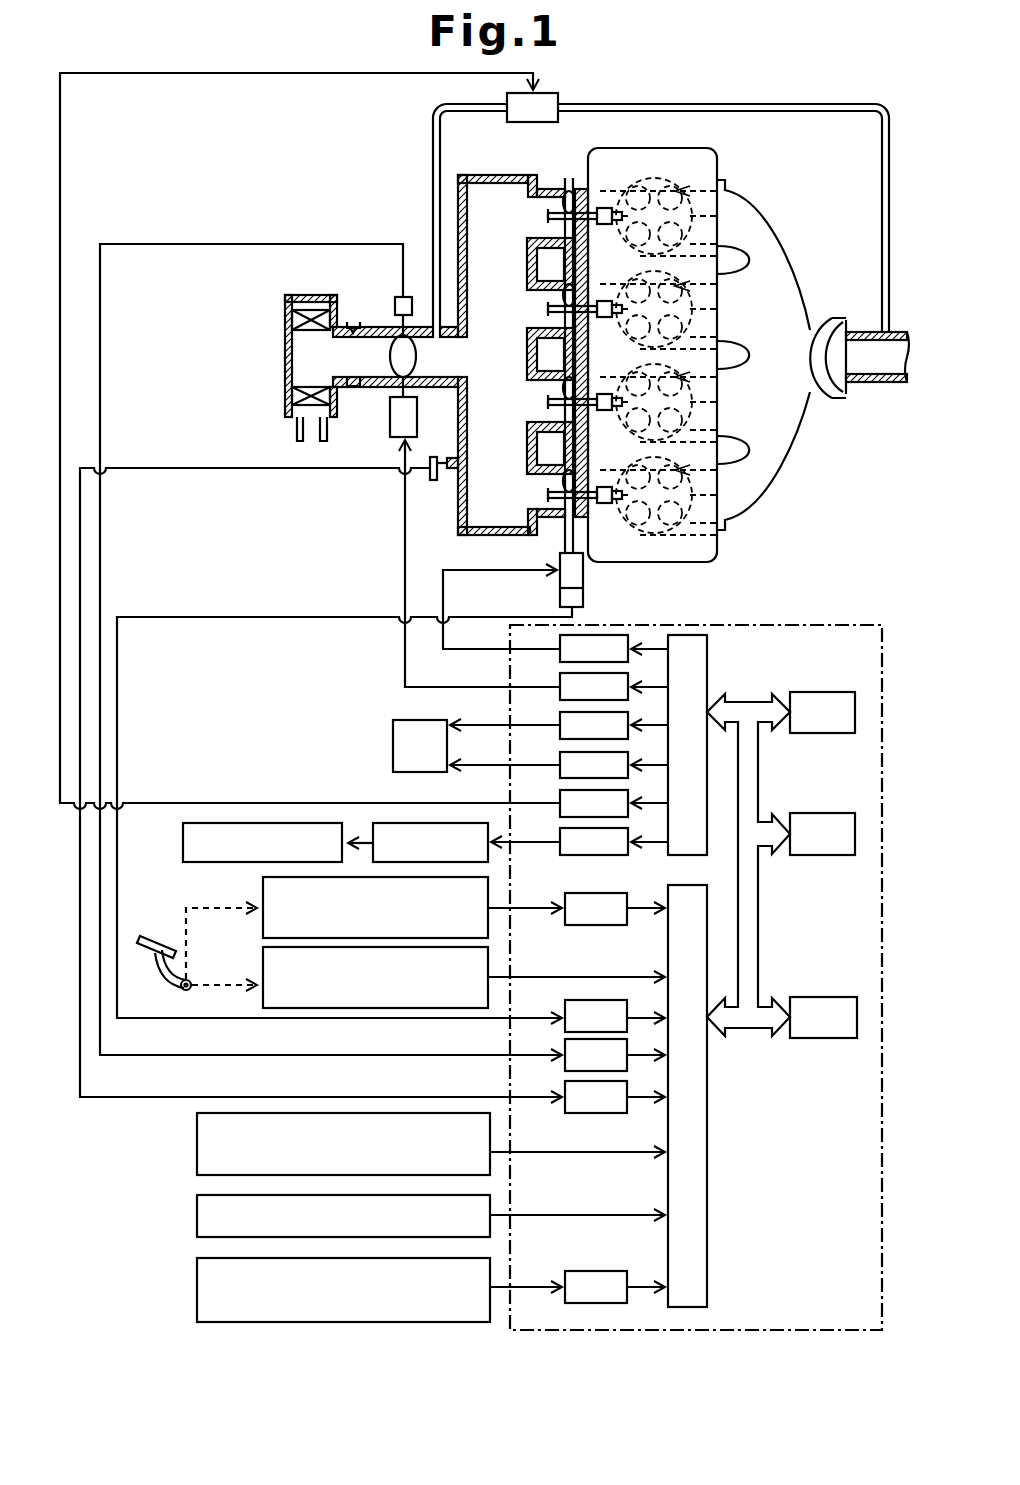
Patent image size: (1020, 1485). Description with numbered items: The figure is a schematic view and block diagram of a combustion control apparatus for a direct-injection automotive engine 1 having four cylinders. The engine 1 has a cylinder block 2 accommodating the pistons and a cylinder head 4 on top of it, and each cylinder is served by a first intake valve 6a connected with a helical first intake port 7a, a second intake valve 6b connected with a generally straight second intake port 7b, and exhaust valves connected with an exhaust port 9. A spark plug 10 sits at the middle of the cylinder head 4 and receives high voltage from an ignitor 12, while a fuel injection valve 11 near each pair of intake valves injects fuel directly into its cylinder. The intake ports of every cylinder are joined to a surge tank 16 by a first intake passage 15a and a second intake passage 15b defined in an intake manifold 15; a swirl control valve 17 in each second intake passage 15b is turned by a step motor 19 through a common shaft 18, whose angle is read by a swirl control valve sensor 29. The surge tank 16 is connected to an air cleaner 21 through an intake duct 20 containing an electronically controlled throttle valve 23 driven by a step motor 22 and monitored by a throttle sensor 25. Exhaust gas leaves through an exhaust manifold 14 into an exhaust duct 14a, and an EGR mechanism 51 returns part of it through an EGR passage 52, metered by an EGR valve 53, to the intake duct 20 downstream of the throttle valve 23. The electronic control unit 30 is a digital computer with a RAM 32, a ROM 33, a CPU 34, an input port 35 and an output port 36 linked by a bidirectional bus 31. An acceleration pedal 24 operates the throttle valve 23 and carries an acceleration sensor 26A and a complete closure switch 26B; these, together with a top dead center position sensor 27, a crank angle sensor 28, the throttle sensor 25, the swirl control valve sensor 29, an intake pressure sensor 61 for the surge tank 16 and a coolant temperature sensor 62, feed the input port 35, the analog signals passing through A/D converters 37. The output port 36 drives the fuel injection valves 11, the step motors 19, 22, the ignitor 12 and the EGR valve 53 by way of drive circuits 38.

The engine 1 is at (723, 150).
The cylinder block 2 is at (695, 562).
The cylinder head 4 is at (697, 563).
The first intake valve 6a is at (638, 405).
The second intake valve 6b is at (687, 305).
The first intake port 7a is at (640, 570).
The second intake port 7b is at (633, 178).
The exhaust port 9 is at (720, 214).
The spark plug 10 is at (268, 823).
The fuel injection valve 11 is at (604, 207).
The ignitor 12 is at (465, 823).
The exhaust manifold 14 is at (804, 395).
The exhaust duct 14a is at (884, 382).
The intake manifold 15 is at (540, 186).
The first intake passage 15a is at (550, 234).
The second intake passage 15b is at (548, 205).
The surge tank 16 is at (458, 205).
The swirl control valve 17 is at (568, 178).
The common shaft 18 is at (537, 352).
The step motor 19 is at (560, 590).
The intake duct 20 is at (372, 327).
The air cleaner 21 is at (285, 400).
The step motor 22 is at (417, 425).
The throttle valve 23 is at (416, 356).
The acceleration pedal 24 is at (148, 955).
The throttle sensor 25 is at (400, 297).
The acceleration sensor 26A is at (263, 890).
The complete closure switch 26B is at (263, 965).
The top dead center position sensor 27 is at (197, 1152).
The crank angle sensor 28 is at (197, 1215).
The swirl control valve sensor 29 is at (583, 597).
The electronic control unit 30 is at (806, 620).
The bidirectional bus 31 is at (740, 702).
The random access memory 32 is at (822, 692).
The read only memory 33 is at (825, 813).
The central processing unit 34 is at (832, 997).
The input port 35 is at (707, 1150).
The output port 36 is at (707, 640).
The A/D converter 37 is at (567, 893).
The drive circuit 38 is at (556, 655).
The exhaust gas recirculation mechanism 51 is at (662, 102).
The EGR passage 52 is at (818, 104).
The EGR valve 53 is at (558, 92).
The intake pressure sensor 61 is at (433, 481).
The coolant temperature sensor 62 is at (197, 1290).